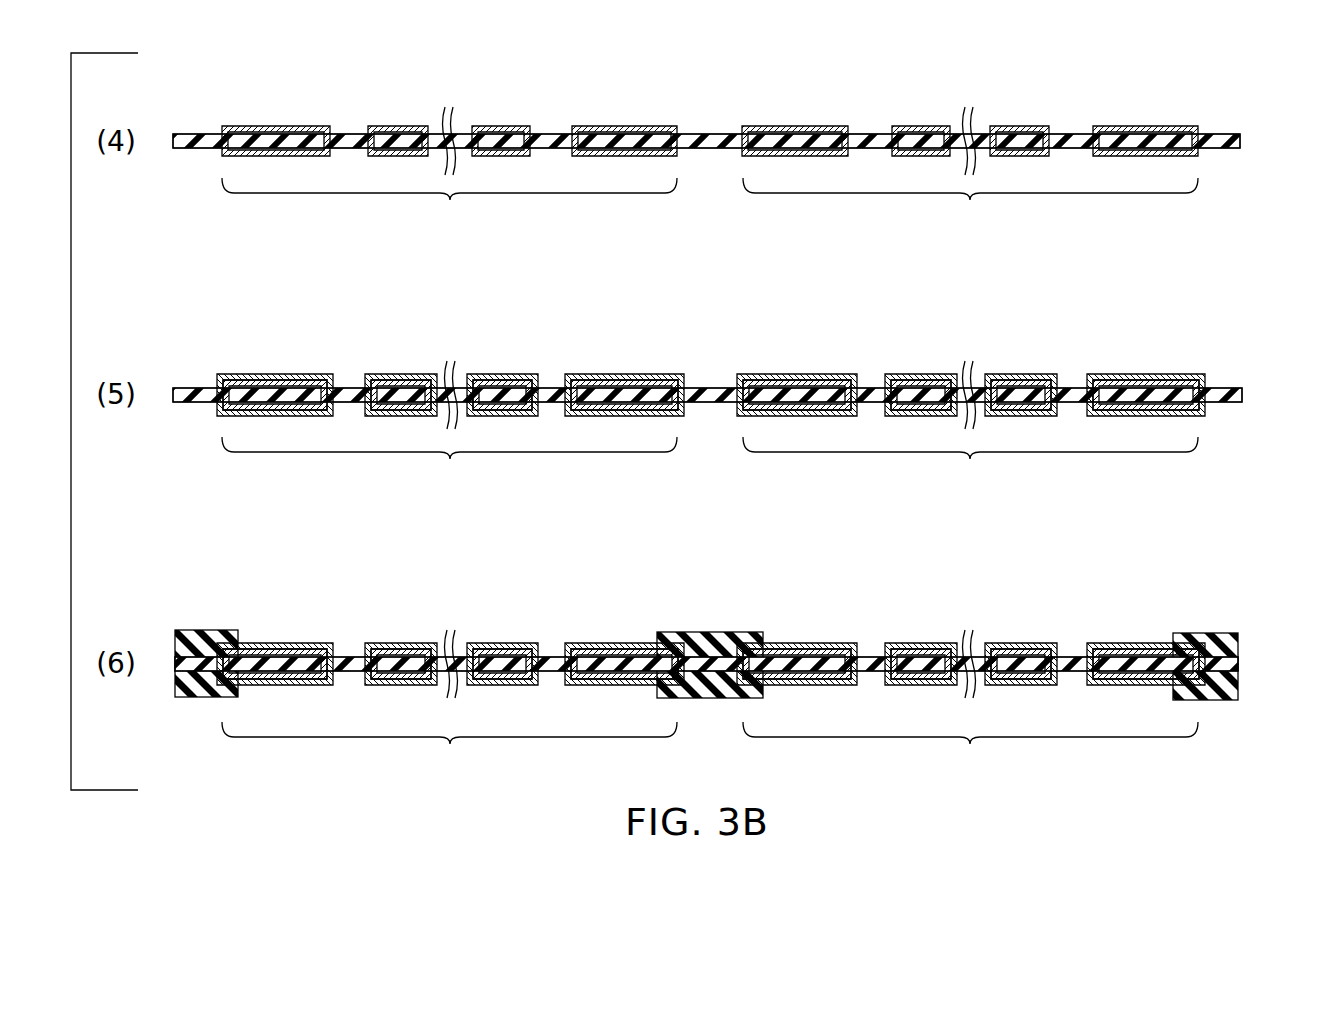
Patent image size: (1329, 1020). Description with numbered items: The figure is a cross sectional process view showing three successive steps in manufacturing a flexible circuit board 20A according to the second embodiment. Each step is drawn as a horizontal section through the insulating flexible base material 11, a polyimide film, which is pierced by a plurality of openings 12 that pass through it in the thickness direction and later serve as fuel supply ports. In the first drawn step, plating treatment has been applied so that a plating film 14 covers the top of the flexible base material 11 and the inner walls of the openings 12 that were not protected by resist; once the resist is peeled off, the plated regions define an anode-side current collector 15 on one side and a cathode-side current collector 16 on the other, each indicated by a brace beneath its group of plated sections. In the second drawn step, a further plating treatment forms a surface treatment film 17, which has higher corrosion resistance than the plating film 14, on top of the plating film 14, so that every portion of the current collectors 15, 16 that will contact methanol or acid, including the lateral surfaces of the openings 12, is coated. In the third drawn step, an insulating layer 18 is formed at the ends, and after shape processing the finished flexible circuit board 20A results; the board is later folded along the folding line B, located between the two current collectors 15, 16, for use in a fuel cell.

The flexible base material 11 is at (1240, 141).
The openings 12 is at (350, 138).
The plating film 14 is at (629, 127).
The anode-side current collector 15 is at (449, 478).
The cathode-side current collector 16 is at (970, 478).
The surface treatment film 17 is at (595, 374).
The insulating layer 18 is at (1240, 641).
The flexible circuit board 20A is at (1203, 568).
The folding line B is at (714, 632).